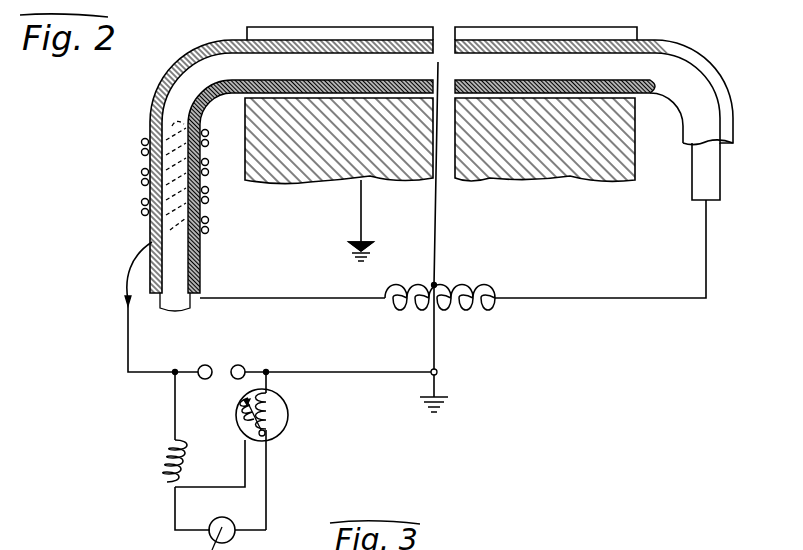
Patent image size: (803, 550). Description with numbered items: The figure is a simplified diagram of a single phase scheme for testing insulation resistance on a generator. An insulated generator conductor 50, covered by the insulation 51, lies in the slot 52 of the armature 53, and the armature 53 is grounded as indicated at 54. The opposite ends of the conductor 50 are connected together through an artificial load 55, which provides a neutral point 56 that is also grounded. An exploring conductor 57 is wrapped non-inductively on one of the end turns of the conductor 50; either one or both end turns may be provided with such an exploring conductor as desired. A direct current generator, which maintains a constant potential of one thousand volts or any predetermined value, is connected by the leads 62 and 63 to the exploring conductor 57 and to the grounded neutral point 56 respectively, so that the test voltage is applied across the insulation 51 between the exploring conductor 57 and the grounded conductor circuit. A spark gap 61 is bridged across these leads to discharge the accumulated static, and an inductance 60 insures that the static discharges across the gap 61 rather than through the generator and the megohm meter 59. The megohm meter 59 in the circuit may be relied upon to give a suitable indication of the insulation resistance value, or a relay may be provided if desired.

The insulated generator conductor 50 is at (193, 75).
The insulation 51 is at (150, 115).
The slot 52 is at (250, 39).
The armature 53 is at (315, 157).
The ground 54 is at (373, 249).
The artificial load 55 is at (450, 285).
The neutral point 56 is at (434, 285).
The exploring conductor 57 is at (142, 211).
The megohm meter 59 is at (280, 423).
The inductance 60 is at (166, 446).
The spark gap 61 is at (222, 370).
The lead 62 is at (128, 333).
The lead 63 is at (327, 372).